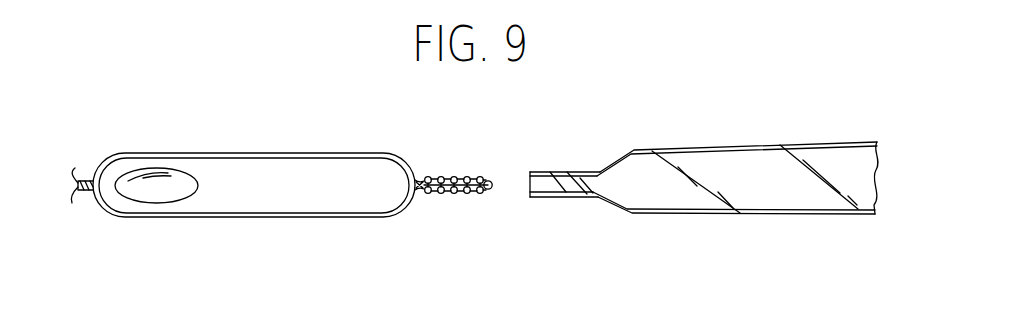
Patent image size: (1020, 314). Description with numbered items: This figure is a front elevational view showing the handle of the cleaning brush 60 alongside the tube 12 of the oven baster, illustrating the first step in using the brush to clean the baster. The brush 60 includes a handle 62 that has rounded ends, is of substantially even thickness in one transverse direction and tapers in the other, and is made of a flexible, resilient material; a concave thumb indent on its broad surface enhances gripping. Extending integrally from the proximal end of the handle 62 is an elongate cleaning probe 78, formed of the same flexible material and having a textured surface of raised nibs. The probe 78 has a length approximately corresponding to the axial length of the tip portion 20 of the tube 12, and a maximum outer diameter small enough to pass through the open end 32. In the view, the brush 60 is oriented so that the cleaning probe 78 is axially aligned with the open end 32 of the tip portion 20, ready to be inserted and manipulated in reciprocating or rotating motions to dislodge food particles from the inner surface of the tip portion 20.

The cleaning brush 60 is at (138, 252).
The handle 62 is at (287, 153).
The cleaning probe 78 is at (445, 210).
The tube 12 is at (790, 137).
The tip portion 20 is at (563, 172).
The open end 32 is at (530, 198).